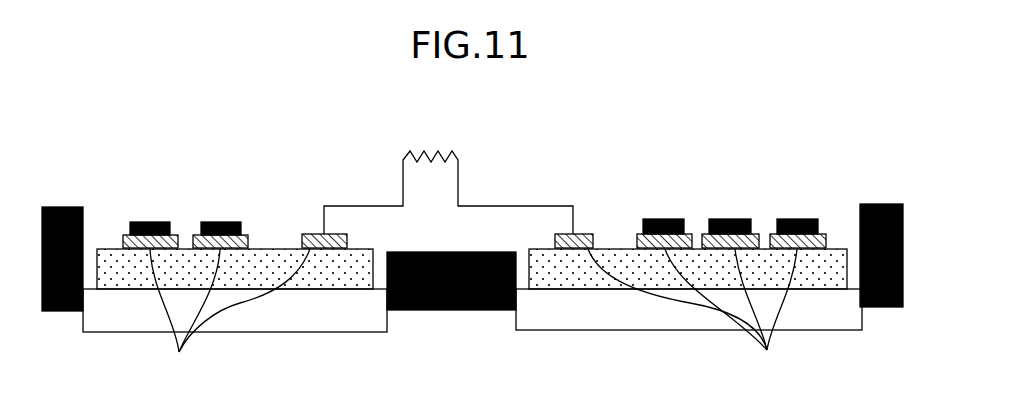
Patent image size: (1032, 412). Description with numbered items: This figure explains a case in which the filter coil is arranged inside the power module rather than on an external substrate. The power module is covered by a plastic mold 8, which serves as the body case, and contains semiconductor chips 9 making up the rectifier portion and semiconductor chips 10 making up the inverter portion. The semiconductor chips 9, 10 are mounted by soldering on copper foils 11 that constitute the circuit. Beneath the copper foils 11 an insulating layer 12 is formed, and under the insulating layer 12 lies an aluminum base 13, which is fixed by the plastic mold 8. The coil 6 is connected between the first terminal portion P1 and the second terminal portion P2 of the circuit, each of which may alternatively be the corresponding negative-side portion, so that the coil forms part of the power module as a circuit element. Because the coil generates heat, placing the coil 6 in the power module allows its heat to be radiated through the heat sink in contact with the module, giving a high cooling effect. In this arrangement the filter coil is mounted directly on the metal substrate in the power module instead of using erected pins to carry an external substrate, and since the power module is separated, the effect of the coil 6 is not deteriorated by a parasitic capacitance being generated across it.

The coil 6 is at (440, 154).
The plastic mold 8 is at (63, 207).
The semiconductor chips 9 is at (213, 222).
The semiconductor chips 10 is at (788, 219).
The copper foils 11 is at (473, 315).
The insulating layer 12 is at (598, 285).
The aluminum base 13 is at (268, 315).
The P1 or N1 portion P1 is at (312, 232).
The P2 or N2 portion P2 is at (588, 232).